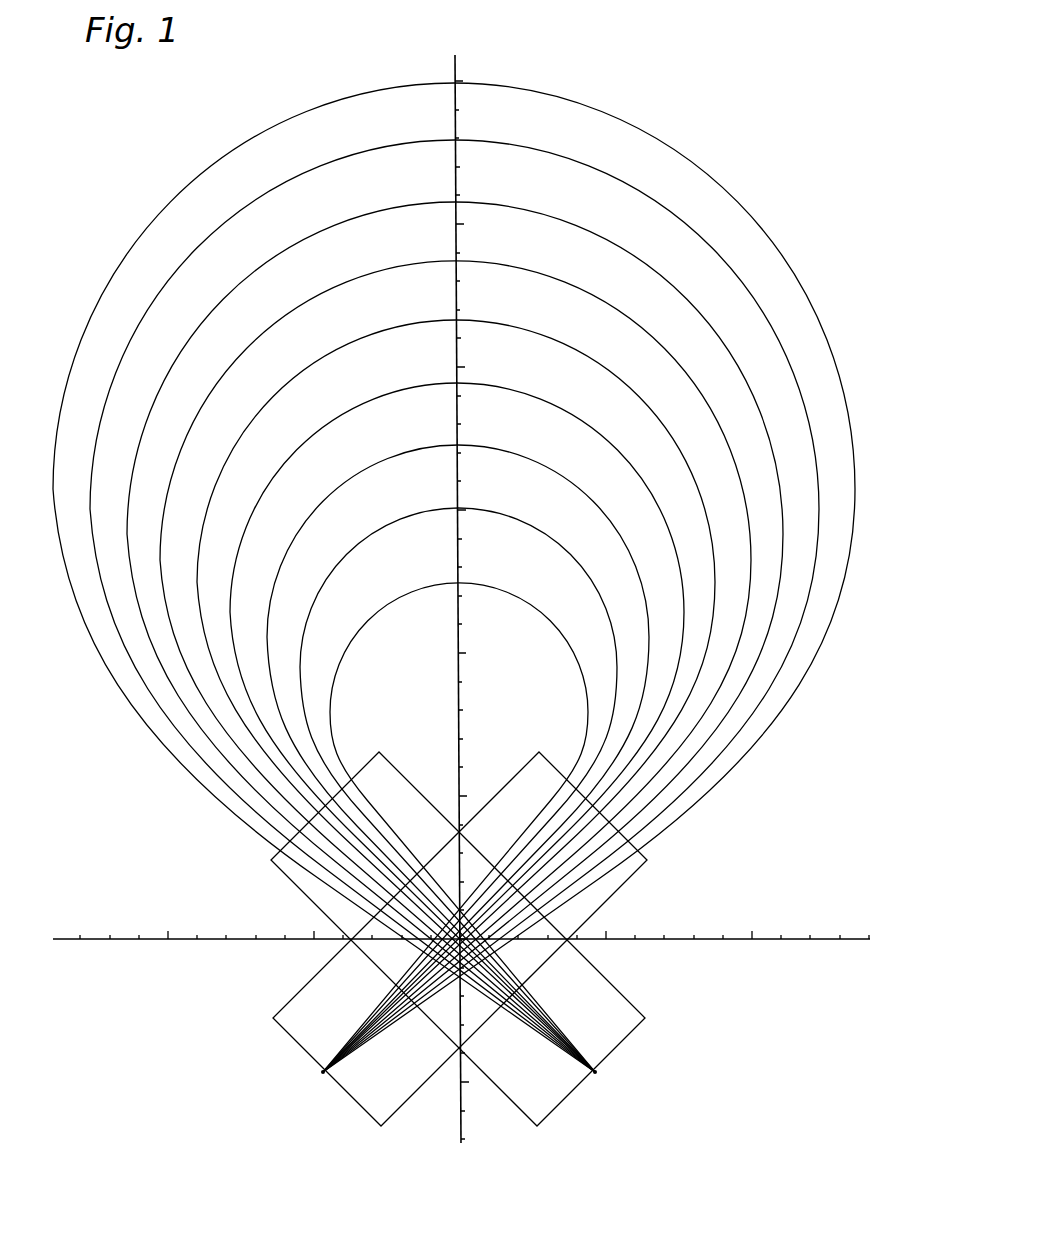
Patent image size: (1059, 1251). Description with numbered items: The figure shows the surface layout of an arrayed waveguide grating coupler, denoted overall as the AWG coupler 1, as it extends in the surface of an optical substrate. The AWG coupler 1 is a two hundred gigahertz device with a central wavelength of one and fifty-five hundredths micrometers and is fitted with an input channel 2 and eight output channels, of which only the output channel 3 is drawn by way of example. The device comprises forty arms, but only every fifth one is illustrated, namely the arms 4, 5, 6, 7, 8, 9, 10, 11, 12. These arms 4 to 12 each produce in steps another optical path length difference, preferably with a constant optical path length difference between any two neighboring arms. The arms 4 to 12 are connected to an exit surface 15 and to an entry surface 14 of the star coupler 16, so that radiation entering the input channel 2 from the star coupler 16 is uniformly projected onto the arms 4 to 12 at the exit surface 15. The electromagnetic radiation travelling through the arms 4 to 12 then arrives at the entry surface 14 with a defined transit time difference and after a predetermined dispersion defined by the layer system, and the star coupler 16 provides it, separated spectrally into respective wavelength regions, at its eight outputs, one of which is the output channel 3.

The AWG coupler 1 is at (735, 122).
The input channel 2 is at (320, 1075).
The output channel 3 is at (605, 1078).
The arm 4 is at (212, 165).
The arm 5 is at (210, 237).
The arm 6 is at (208, 315).
The arm 7 is at (210, 392).
The arm 8 is at (222, 462).
The arm 9 is at (248, 527).
The arm 10 is at (268, 605).
The arm 11 is at (300, 672).
The arm 12 is at (335, 718).
The entry surface 14 is at (275, 857).
The exit surface 15 is at (640, 850).
The star coupler 16 is at (455, 939).